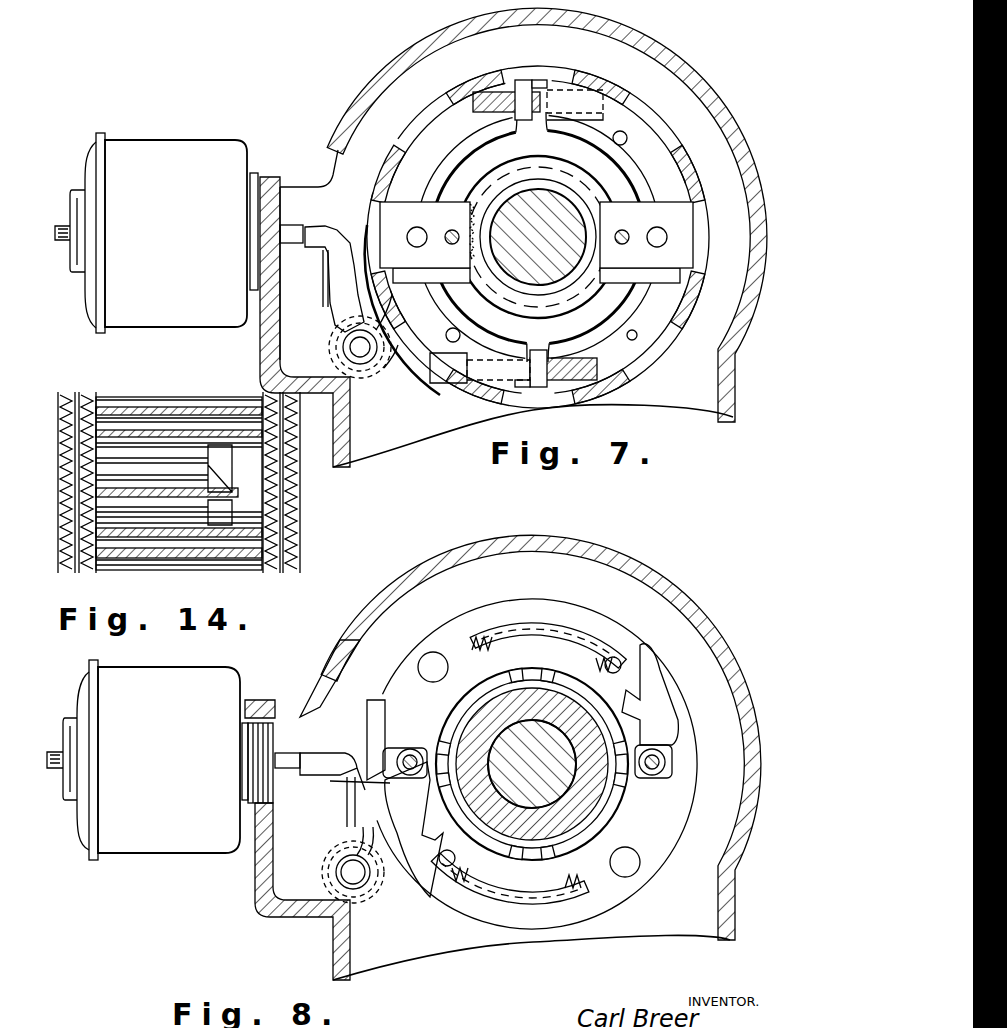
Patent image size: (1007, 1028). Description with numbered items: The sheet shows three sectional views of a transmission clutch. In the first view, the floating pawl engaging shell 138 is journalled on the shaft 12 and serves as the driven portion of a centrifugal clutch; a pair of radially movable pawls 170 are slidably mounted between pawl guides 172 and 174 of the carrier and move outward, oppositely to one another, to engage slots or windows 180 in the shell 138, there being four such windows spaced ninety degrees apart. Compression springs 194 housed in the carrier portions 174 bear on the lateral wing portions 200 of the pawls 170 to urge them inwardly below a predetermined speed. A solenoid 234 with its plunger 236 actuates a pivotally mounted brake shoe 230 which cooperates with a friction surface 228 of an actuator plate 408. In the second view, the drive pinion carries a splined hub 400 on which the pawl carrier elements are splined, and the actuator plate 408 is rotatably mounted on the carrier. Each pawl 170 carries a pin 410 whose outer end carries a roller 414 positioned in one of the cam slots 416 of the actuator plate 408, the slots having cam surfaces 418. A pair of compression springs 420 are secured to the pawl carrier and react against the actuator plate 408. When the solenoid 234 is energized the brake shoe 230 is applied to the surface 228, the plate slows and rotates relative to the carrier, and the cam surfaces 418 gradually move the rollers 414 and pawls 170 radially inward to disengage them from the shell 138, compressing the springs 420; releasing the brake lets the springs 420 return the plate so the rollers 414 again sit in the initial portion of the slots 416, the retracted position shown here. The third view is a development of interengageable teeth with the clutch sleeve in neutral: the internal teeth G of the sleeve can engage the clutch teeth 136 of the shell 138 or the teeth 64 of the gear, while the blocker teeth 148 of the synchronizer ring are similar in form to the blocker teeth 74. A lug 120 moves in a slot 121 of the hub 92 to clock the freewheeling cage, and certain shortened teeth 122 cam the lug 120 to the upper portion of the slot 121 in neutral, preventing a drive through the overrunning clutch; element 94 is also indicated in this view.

In FIG. 7, the shaft 12 is at (552, 221).
In FIG. 8, the shaft 12 is at (546, 748).
In FIG. 14, the teeth of gear 64 is at (296, 572).
In FIG. 14, the blocker teeth 74 is at (268, 575).
In FIG. 14, the hub 92 is at (159, 578).
In FIG. 14, the plate 94 is at (216, 572).
In FIG. 14, the lug 120 is at (228, 475).
In FIG. 14, the slot 121 is at (222, 521).
In FIG. 14, the shortened tooth 122 is at (155, 490).
In FIG. 14, the clutch teeth 136 is at (50, 575).
In FIG. 14, the blocker teeth 148 is at (90, 575).
In FIG. 14, the internal teeth G is at (150, 395).
In FIG. 7, the floating pawl engaging shell 138 is at (526, 93).
In FIG. 7, the pawl 170 is at (436, 211).
In FIG. 7, the pawl guide 172 is at (640, 145).
In FIG. 7, the pawl guide 174 is at (450, 117).
In FIG. 7, the slots or windows 180 is at (412, 143).
In FIG. 7, the compression spring 194 is at (525, 96).
In FIG. 7, the lateral wing portion 200 is at (553, 90).
In FIG. 7, the friction surface 228 is at (318, 219).
In FIG. 8, the friction surface 228 is at (330, 672).
In FIG. 7, the brake shoe 230 is at (342, 275).
In FIG. 8, the brake shoe 230 is at (365, 768).
In FIG. 7, the solenoid 234 is at (192, 252).
In FIG. 8, the solenoid 234 is at (177, 769).
In FIG. 7, the plunger 236 is at (283, 230).
In FIG. 8, the plunger 236 is at (296, 752).
In FIG. 8, the splined hub 400 is at (580, 806).
In FIG. 8, the actuator plate 408 is at (436, 640).
In FIG. 7, the pin 410 is at (415, 247).
In FIG. 8, the pin 410 is at (425, 748).
In FIG. 8, the roller 414 is at (415, 745).
In FIG. 8, the cam slot 416 is at (644, 650).
In FIG. 8, the cam surface 418 is at (340, 785).
In FIG. 8, the compression spring 420 is at (487, 635).